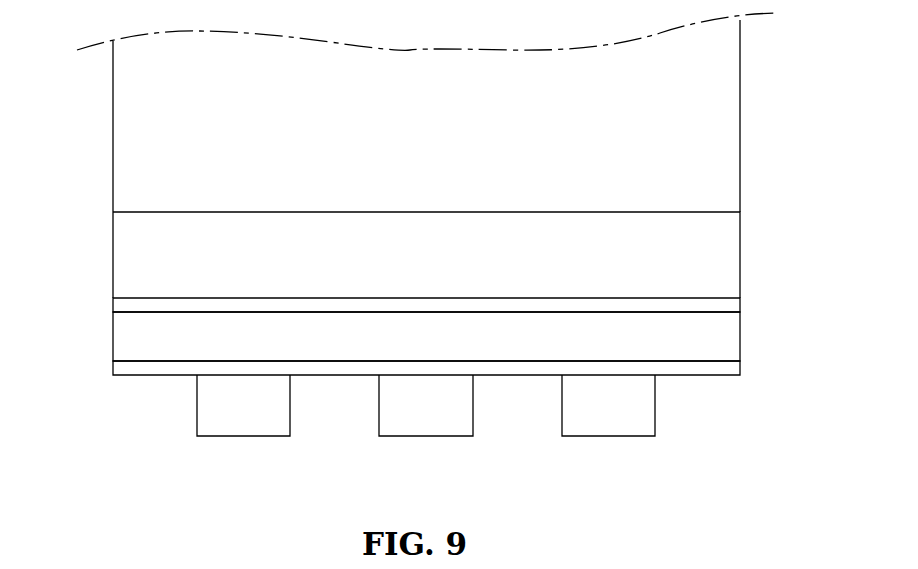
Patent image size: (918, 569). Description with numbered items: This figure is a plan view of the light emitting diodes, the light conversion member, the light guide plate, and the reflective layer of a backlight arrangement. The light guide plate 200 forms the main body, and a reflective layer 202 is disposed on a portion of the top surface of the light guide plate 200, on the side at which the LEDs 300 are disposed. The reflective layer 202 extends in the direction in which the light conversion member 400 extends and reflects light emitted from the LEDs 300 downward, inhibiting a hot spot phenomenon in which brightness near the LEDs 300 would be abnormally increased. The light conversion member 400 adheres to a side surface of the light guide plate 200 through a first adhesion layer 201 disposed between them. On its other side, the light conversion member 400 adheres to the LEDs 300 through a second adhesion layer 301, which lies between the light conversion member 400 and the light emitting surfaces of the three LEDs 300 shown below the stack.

The light guide plate 200 is at (122, 180).
The reflective layer 202 is at (118, 258).
The first adhesion layer 201 is at (118, 305).
The light conversion member 400 is at (118, 335).
The second adhesion layer 301 is at (118, 365).
The LEDs 300 is at (247, 428).